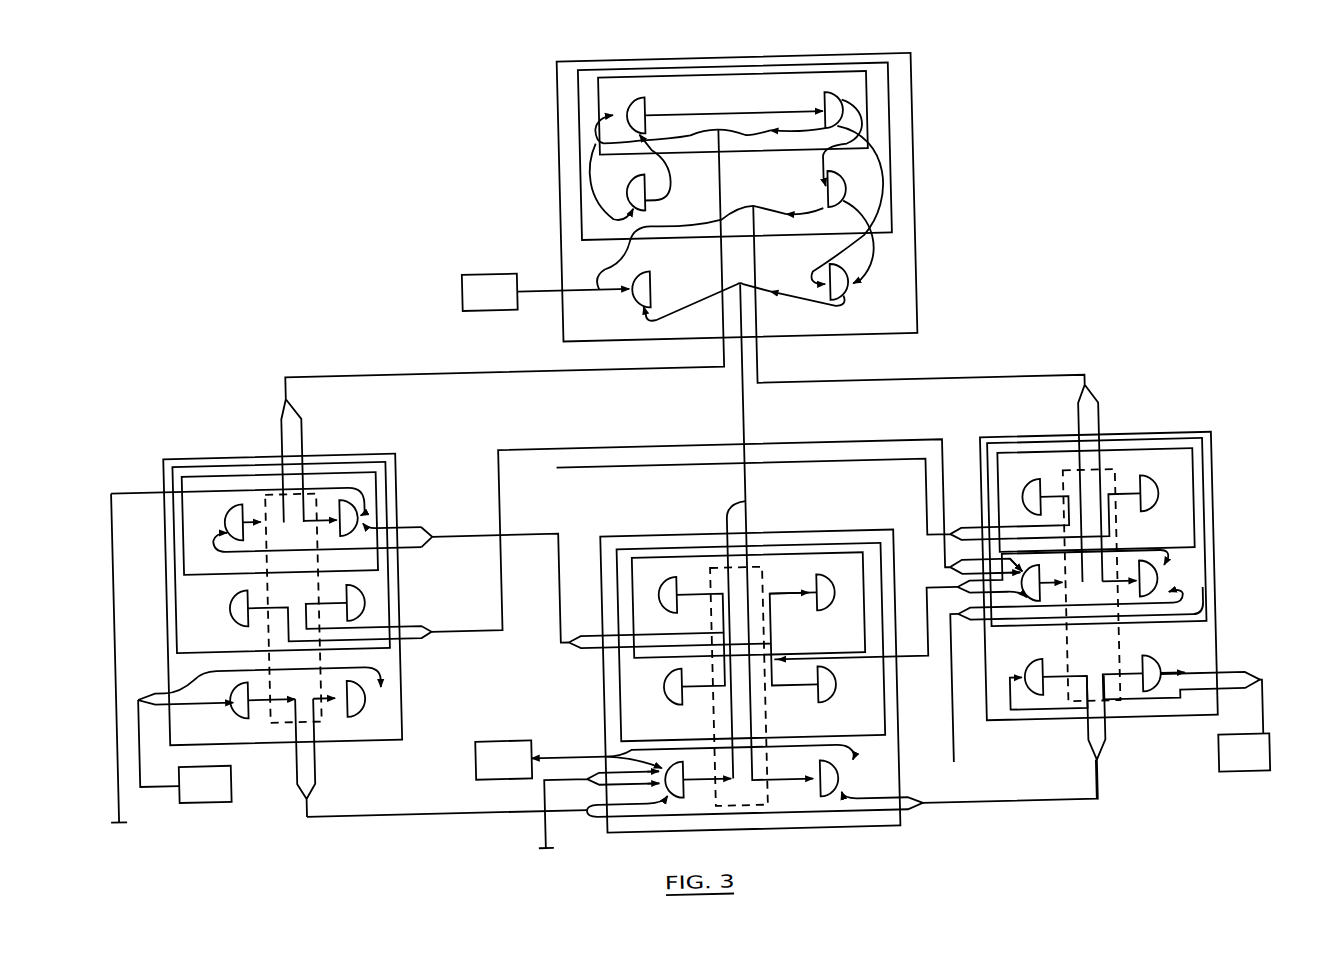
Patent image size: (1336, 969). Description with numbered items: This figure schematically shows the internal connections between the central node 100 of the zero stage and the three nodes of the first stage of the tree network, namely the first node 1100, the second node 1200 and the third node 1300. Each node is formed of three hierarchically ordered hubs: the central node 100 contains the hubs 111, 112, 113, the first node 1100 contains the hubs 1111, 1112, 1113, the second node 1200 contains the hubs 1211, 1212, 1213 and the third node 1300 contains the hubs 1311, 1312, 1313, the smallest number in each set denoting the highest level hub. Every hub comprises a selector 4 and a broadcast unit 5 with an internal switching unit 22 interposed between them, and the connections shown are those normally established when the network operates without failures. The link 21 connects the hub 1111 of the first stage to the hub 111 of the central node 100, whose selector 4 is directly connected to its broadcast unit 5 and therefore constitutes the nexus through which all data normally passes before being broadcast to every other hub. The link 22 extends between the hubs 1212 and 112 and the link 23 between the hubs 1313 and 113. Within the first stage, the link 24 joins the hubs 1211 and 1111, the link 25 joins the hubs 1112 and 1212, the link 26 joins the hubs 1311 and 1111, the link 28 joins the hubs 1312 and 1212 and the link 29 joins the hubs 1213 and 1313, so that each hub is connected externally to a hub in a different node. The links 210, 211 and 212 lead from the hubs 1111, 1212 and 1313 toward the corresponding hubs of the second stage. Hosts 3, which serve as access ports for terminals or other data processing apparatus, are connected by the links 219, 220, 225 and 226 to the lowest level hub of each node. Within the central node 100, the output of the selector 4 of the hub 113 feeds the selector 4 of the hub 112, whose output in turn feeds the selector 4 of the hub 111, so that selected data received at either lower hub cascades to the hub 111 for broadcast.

The host 3 is at (480, 270).
The selector 4 is at (656, 110).
The broadcast unit 5 is at (822, 106).
The link 21 is at (608, 370).
The internal switching unit 22 is at (993, 385).
The link 23 is at (744, 414).
The link 24 is at (849, 501).
The link 25 is at (538, 444).
The link 26 is at (551, 627).
The link 28 is at (925, 606).
The link 29 is at (1090, 800).
The central node 100 is at (553, 119).
The hub 111 is at (660, 77).
The hub 112 is at (616, 69).
The hub 113 is at (571, 58).
The link 210 is at (151, 479).
The link 211 is at (535, 829).
The link 212 is at (938, 764).
The link 219 is at (148, 677).
The link 220 is at (553, 749).
The link 225 is at (1257, 712).
The link 226 is at (545, 282).
The first node of the first stage 1100 is at (217, 419).
The hub 1111 is at (327, 471).
The hub 1112 is at (359, 461).
The hub 1113 is at (398, 450).
The second node of the first stage 1200 is at (1229, 484).
The hub 1211 is at (1124, 465).
The hub 1212 is at (1162, 455).
The hub 1213 is at (1212, 449).
The third node of the first stage 1300 is at (640, 531).
The hub 1311 is at (798, 560).
The hub 1312 is at (820, 551).
The hub 1313 is at (874, 540).